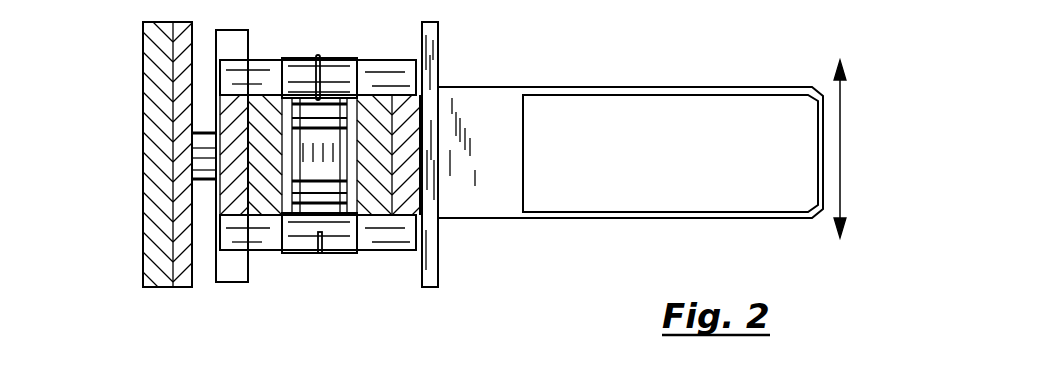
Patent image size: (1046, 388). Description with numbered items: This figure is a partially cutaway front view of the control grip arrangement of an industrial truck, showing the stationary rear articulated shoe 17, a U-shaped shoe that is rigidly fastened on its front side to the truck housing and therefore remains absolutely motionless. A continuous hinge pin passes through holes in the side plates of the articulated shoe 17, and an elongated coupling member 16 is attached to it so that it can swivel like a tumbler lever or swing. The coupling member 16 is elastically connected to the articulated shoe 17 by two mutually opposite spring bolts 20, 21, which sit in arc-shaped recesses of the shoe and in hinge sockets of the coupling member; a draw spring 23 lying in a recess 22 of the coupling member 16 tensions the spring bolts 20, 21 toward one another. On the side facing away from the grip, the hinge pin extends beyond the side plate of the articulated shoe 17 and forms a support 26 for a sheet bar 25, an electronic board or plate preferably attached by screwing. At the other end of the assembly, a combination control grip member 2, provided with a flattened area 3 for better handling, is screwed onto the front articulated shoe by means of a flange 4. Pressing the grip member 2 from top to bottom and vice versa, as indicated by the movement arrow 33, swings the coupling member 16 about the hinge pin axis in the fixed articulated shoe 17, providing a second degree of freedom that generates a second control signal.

The combination control grip member 2 is at (497, 190).
The flattened area 3 is at (630, 177).
The flange 4 is at (432, 270).
The coupling member 16 is at (263, 180).
The rear articulated shoe 17 is at (240, 270).
The spring bolt 20 is at (380, 237).
The spring bolt 21 is at (237, 75).
The recess 22 is at (282, 253).
The draw spring 23 is at (331, 220).
The sheet bar 25 is at (183, 258).
The support 26 is at (205, 140).
The movement arrow 33 is at (842, 177).